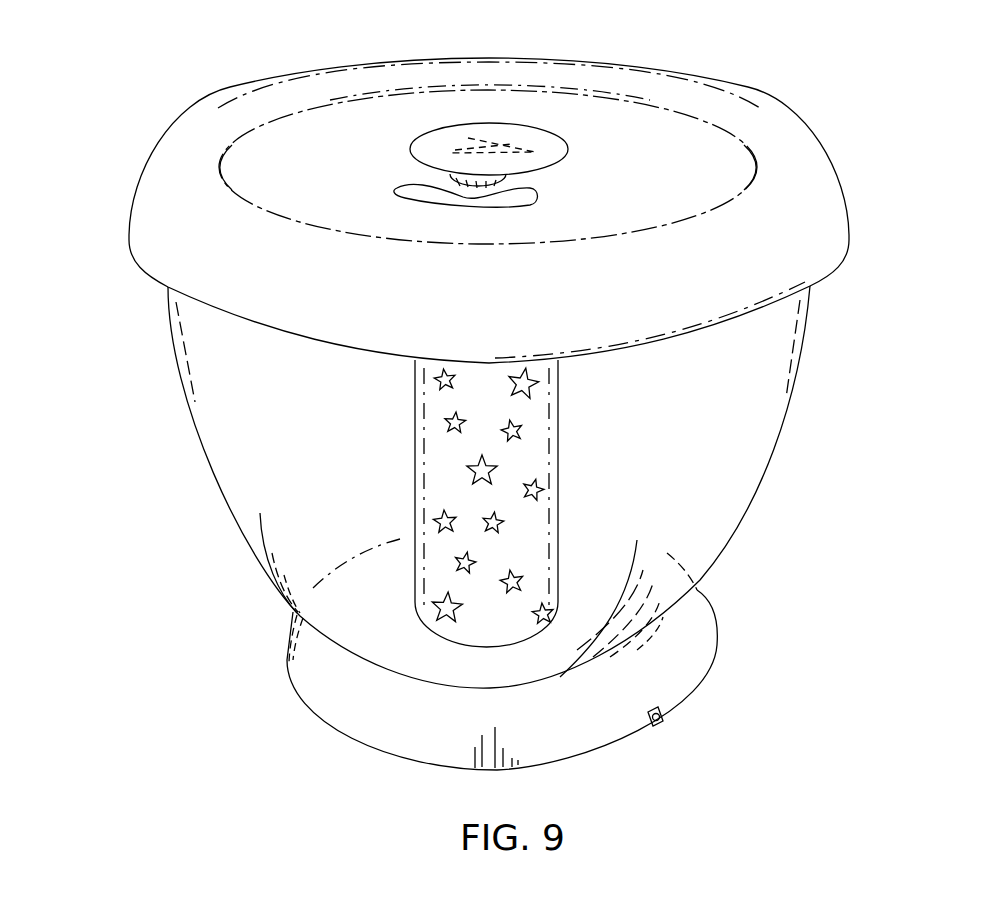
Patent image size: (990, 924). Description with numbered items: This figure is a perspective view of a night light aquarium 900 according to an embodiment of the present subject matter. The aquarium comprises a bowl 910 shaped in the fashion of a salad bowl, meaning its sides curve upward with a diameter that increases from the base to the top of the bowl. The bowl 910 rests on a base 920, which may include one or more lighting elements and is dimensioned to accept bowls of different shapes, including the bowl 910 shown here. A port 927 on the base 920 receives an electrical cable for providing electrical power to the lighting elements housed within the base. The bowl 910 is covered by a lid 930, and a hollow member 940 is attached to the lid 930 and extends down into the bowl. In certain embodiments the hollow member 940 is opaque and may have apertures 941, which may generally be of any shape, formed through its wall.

The container assembly 900 is at (884, 94).
The bowl 910 is at (790, 413).
The base 920 is at (713, 638).
The port 927 is at (662, 724).
The lid 930 is at (733, 91).
The hollow member 940 is at (558, 455).
The apertures 941 is at (530, 395).